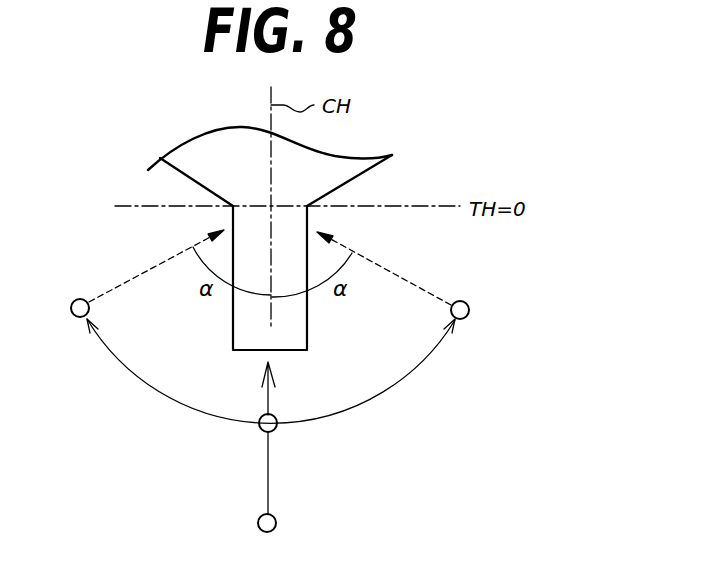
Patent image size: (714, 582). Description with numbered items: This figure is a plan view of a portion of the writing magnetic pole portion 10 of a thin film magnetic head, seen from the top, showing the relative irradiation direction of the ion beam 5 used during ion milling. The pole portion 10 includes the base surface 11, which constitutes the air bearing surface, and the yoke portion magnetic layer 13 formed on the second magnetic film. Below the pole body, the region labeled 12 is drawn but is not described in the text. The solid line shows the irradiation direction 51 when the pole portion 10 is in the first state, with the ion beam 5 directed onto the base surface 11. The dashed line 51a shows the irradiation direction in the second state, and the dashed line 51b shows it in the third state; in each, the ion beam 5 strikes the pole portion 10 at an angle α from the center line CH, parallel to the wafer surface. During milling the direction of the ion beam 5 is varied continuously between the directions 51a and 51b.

The ion beam 5 is at (80, 317).
The writing magnetic pole portion 10 is at (368, 158).
The base surface 11 is at (298, 352).
The blade root 12 is at (300, 325).
The yoke portion magnetic layer 13 is at (354, 177).
The irradiation direction 51 is at (268, 465).
The irradiation direction 51a is at (125, 285).
The irradiation direction 51b is at (382, 262).